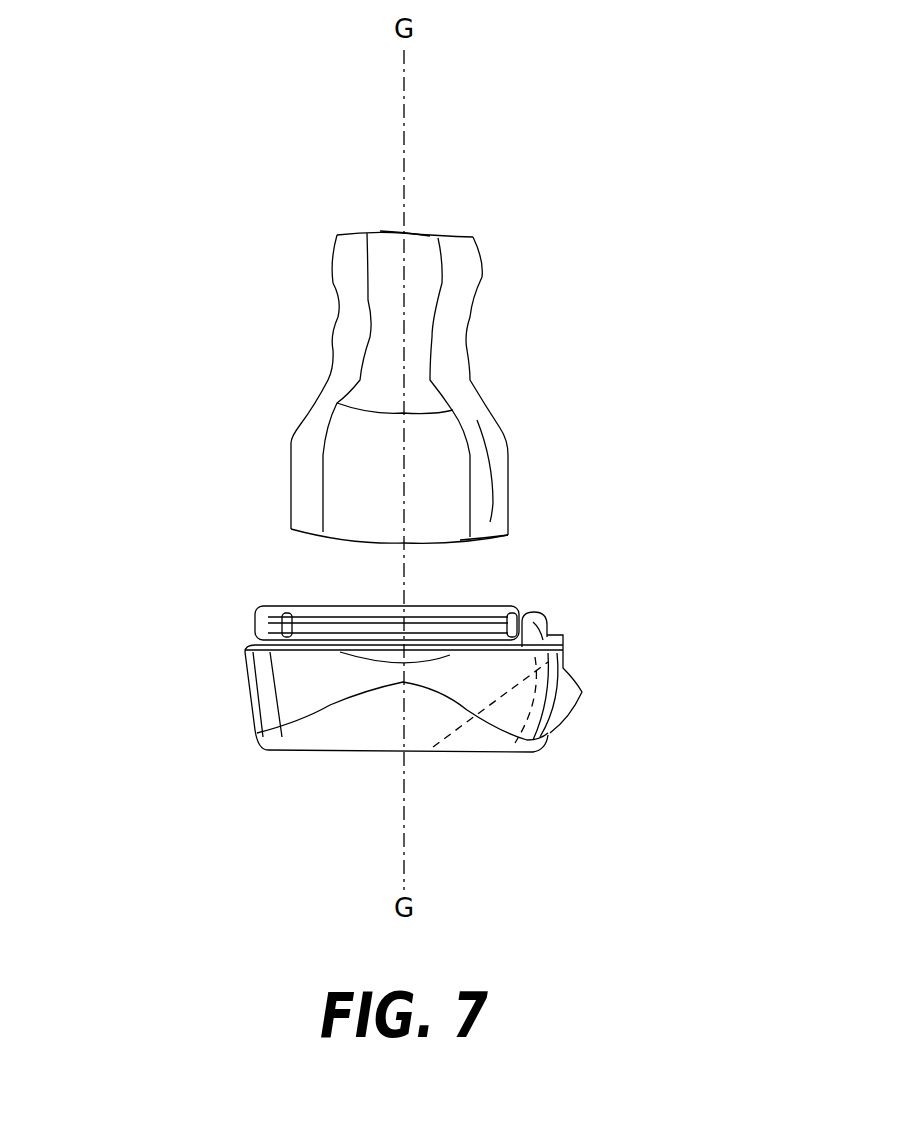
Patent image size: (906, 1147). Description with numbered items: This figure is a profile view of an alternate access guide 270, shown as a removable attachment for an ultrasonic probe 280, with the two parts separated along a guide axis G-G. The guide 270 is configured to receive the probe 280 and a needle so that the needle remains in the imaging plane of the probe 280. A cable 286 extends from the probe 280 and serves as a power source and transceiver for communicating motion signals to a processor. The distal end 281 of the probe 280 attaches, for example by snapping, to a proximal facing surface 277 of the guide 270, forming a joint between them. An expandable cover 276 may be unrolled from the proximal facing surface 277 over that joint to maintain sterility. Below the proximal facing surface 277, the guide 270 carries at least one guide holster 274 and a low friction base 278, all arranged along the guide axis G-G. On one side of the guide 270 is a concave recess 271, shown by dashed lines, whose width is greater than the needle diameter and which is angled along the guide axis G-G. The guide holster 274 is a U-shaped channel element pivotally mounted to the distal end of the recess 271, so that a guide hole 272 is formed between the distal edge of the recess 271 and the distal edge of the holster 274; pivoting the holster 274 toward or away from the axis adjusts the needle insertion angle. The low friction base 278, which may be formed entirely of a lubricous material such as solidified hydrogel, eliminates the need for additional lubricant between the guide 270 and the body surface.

The access guide 270 is at (590, 591).
The concave recess 271 is at (515, 700).
The guide hole 272 is at (487, 740).
The guide holster 274 is at (565, 680).
The expandable cover 276 is at (272, 630).
The proximal facing surface 277 is at (335, 607).
The low friction base 278 is at (348, 732).
The probe 280 is at (320, 455).
The distal end of probe 281 is at (500, 540).
The cable 286 is at (415, 258).